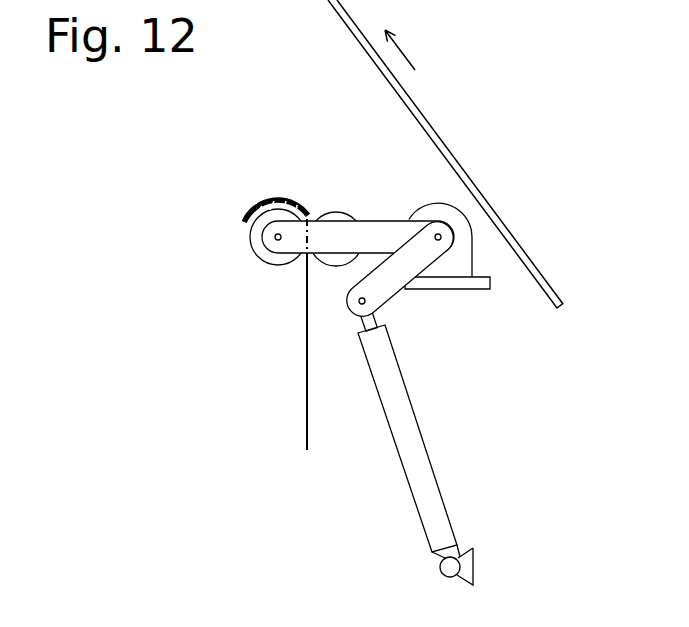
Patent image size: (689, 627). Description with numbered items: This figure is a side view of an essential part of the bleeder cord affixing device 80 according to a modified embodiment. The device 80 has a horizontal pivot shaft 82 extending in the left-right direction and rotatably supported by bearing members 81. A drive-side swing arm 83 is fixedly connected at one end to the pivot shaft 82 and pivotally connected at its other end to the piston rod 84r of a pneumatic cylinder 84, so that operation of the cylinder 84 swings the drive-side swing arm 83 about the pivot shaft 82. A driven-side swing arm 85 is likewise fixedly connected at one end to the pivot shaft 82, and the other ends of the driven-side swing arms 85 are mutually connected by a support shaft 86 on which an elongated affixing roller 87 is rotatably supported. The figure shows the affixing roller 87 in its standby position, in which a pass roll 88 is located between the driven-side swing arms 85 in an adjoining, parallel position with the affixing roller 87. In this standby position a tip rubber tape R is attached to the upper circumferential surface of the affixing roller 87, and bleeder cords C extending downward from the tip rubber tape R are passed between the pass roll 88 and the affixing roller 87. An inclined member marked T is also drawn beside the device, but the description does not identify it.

The bleeder cord affixing device 80 is at (283, 168).
The bearing members 81 is at (473, 254).
The pivot shaft 82 is at (438, 234).
The drive-side swing arm 83 is at (430, 268).
The pneumatic cylinder 84 is at (425, 433).
The piston rod 84r is at (358, 326).
The driven-side swing arm 85 is at (383, 221).
The support shaft 86 is at (277, 243).
The affixing roller 87 is at (250, 238).
The pass roll 88 is at (335, 212).
The tip rubber tape R is at (273, 198).
The sheet T is at (443, 142).
The bleeder cords C is at (307, 403).